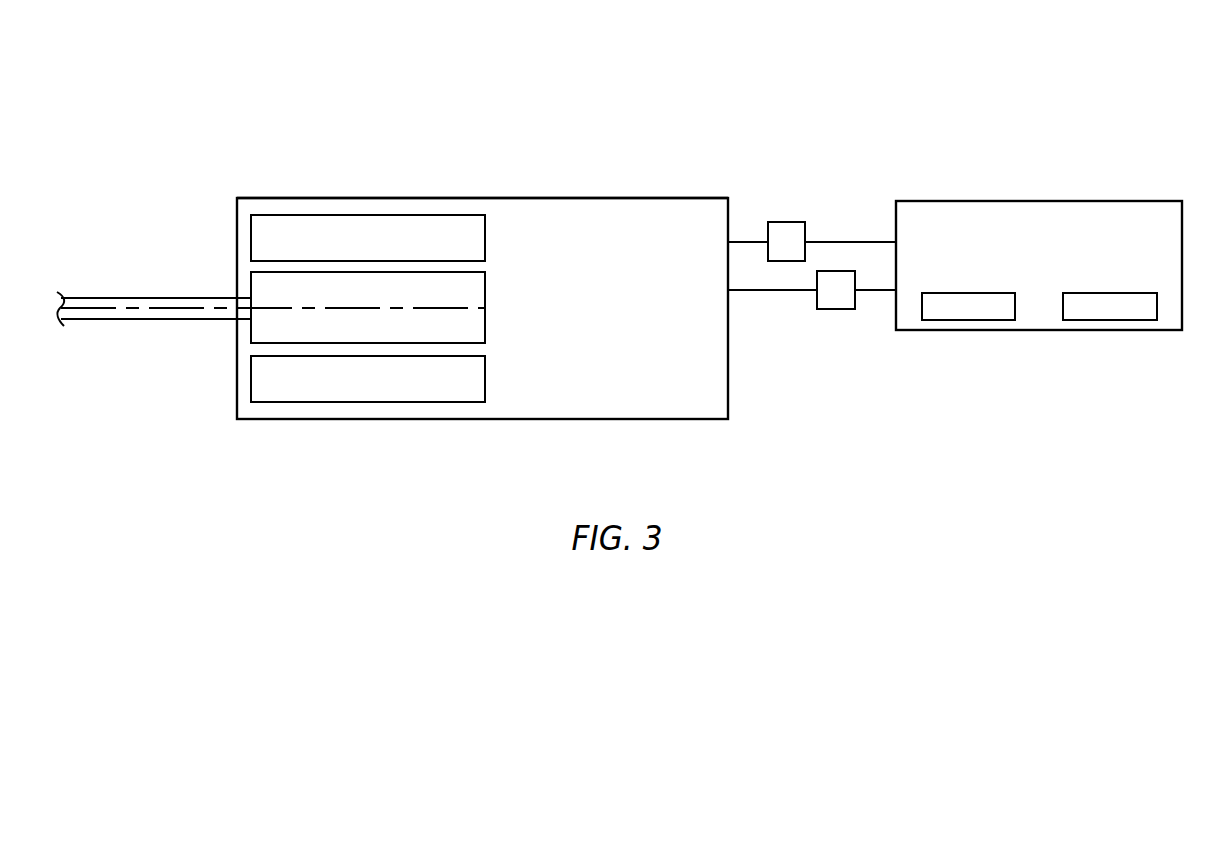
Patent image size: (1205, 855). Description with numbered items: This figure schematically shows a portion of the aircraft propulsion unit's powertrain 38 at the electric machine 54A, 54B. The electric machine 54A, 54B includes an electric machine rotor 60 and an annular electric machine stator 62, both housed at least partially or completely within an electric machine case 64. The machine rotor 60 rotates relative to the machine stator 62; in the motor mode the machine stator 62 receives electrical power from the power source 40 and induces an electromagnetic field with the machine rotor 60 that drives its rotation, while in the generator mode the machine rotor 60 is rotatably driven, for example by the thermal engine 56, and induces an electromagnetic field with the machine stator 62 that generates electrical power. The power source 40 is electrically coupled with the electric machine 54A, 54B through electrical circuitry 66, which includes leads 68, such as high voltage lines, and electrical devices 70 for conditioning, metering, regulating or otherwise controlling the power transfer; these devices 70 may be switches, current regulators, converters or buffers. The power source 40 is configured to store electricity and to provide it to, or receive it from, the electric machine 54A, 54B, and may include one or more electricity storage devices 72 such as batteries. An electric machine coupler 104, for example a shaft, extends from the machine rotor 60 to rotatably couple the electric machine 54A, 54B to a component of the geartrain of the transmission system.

The powertrain 38 is at (272, 142).
The power source 40 is at (1060, 199).
The electric machine 54A is at (482, 291).
The electric machine 54B is at (632, 192).
The thermal engine 56 is at (668, 419).
The electric machine rotor 60 is at (485, 332).
The electric machine stator 62 is at (485, 239).
The electric machine case 64 is at (520, 197).
The electrical circuitry 66 is at (830, 170).
The leads 68 is at (755, 240).
The electrical devices 70 is at (785, 222).
The electricity storage devices 72 is at (972, 320).
The electric machine coupler 104 is at (103, 320).